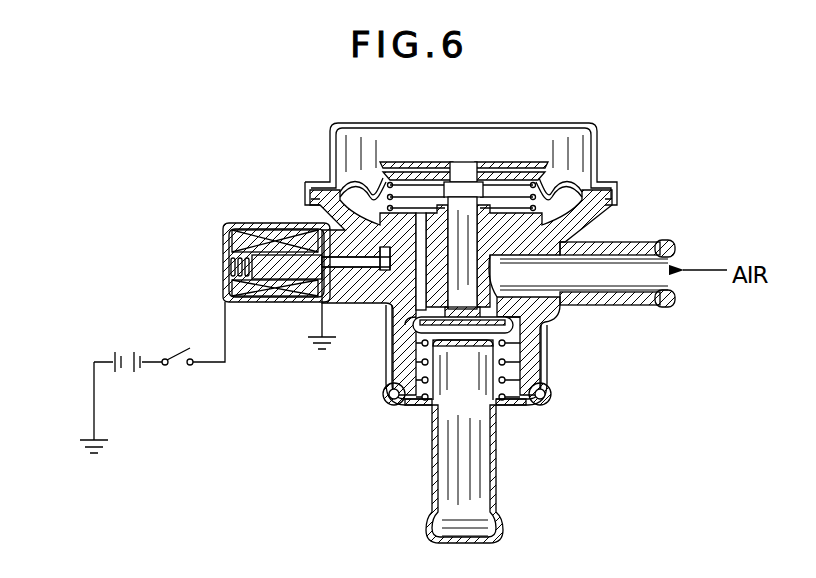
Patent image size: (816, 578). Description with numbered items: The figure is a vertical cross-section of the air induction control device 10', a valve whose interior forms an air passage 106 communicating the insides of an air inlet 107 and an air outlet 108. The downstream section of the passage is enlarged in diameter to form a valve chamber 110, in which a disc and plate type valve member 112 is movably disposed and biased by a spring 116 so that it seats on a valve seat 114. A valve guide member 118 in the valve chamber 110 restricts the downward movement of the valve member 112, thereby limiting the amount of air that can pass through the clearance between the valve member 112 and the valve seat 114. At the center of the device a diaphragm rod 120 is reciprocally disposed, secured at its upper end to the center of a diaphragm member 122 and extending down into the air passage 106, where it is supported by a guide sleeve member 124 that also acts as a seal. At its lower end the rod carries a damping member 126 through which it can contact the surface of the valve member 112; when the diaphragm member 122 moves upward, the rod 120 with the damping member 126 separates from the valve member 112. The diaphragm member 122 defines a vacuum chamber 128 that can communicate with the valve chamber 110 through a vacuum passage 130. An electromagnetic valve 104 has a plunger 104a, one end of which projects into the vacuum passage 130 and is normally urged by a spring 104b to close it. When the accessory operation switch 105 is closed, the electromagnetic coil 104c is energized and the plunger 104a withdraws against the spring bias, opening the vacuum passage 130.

The air induction control device 10' is at (490, 309).
The electromagnetic valve 104 is at (224, 230).
The plunger 104a is at (287, 238).
The spring 104b is at (228, 273).
The electromagnetic coil 104c is at (260, 300).
The accessory operation switch 105 is at (177, 366).
The air passage 106 is at (515, 306).
The air inlet 107 is at (665, 308).
The air outlet 108 is at (502, 530).
The valve chamber 110 is at (410, 377).
The valve member 112 is at (505, 360).
The valve seat 114 is at (505, 323).
The spring 116 is at (418, 400).
The valve guide member 118 is at (468, 350).
The diaphragm rod 120 is at (567, 228).
The diaphragm member 122 is at (357, 194).
The guide sleeve member 124 is at (505, 262).
The damping member 126 is at (430, 331).
The vacuum chamber 128 is at (566, 197).
The vacuum passage 130 is at (393, 302).